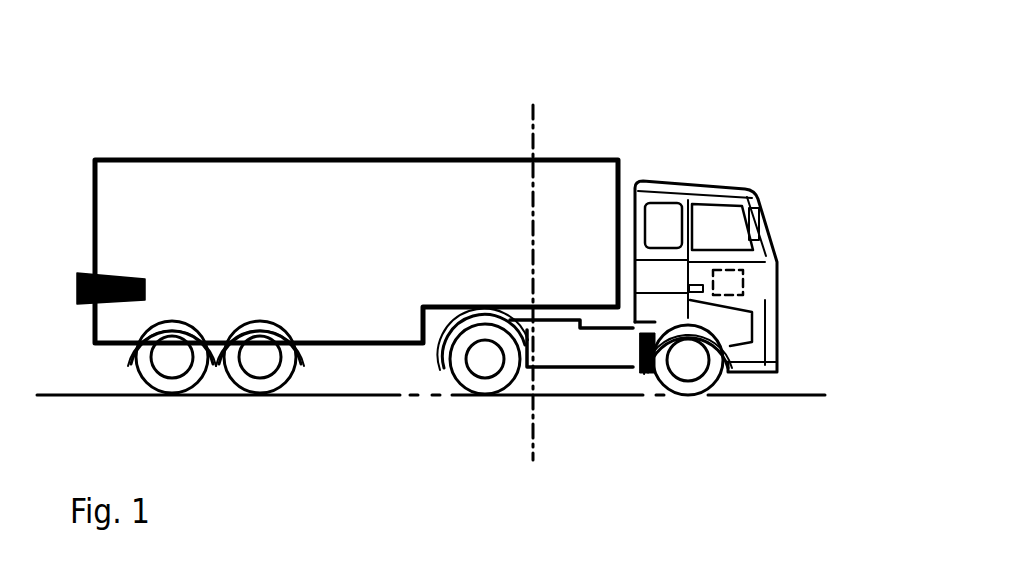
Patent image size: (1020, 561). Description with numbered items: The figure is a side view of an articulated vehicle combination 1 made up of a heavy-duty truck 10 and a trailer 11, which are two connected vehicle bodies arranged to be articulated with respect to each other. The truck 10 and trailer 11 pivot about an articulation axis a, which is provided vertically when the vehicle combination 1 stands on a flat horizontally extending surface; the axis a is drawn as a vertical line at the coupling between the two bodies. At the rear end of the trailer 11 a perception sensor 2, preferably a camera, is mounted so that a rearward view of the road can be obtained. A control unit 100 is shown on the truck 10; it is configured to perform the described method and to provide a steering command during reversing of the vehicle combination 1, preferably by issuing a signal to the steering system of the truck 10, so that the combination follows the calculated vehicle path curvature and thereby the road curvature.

The articulated vehicle combination 1 is at (491, 214).
The truck 10 is at (662, 184).
The trailer 11 is at (363, 157).
The perception sensor 2 is at (80, 284).
The articulation axis a is at (538, 110).
The control unit 100 is at (745, 282).